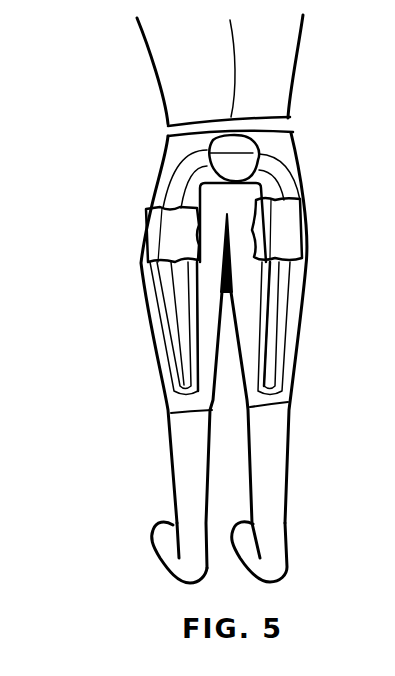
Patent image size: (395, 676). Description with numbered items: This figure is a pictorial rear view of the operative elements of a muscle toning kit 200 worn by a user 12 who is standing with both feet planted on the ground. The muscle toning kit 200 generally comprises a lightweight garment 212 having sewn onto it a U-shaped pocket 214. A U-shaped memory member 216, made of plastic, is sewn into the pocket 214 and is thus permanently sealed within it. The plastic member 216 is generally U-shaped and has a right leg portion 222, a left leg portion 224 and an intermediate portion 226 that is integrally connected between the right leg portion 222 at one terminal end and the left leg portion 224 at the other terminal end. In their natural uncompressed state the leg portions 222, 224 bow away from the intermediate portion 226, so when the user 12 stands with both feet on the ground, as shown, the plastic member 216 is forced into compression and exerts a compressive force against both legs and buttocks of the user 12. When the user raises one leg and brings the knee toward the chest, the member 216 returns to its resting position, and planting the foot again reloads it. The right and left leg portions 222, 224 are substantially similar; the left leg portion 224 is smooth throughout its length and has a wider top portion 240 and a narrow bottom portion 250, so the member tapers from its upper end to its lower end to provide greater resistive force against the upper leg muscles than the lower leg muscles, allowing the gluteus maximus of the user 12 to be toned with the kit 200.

The user 12 is at (267, 37).
The muscle toning kit 200 is at (130, 132).
The lightweight garment 212 is at (172, 411).
The U-shaped pocket 214 is at (281, 167).
The U-shaped memory member 216 is at (287, 243).
The right leg portion 222 is at (281, 210).
The left leg portion 224 is at (165, 241).
The intermediate portion 226 is at (238, 163).
The wider top portion 240 is at (188, 192).
The narrow bottom portion 250 is at (183, 327).